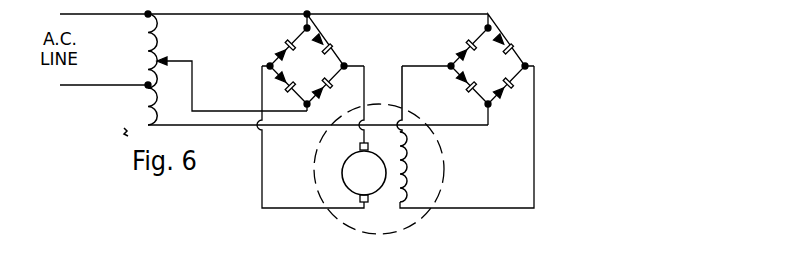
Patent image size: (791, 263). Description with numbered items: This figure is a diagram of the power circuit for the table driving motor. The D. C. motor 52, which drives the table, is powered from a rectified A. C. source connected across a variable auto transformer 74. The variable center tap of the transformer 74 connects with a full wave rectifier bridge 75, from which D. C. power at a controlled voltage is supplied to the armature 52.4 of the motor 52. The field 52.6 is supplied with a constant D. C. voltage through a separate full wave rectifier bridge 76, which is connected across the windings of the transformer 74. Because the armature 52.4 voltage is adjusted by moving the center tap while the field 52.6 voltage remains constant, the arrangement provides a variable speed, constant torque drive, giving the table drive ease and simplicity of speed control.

The variable auto transformer 74 is at (172, 33).
The full wave rectifier bridge 75 is at (318, 76).
The full wave rectifier bridge 76 is at (499, 76).
The D. C. motor 52 is at (395, 155).
The armature 52.4 is at (347, 181).
The field 52.6 is at (411, 188).